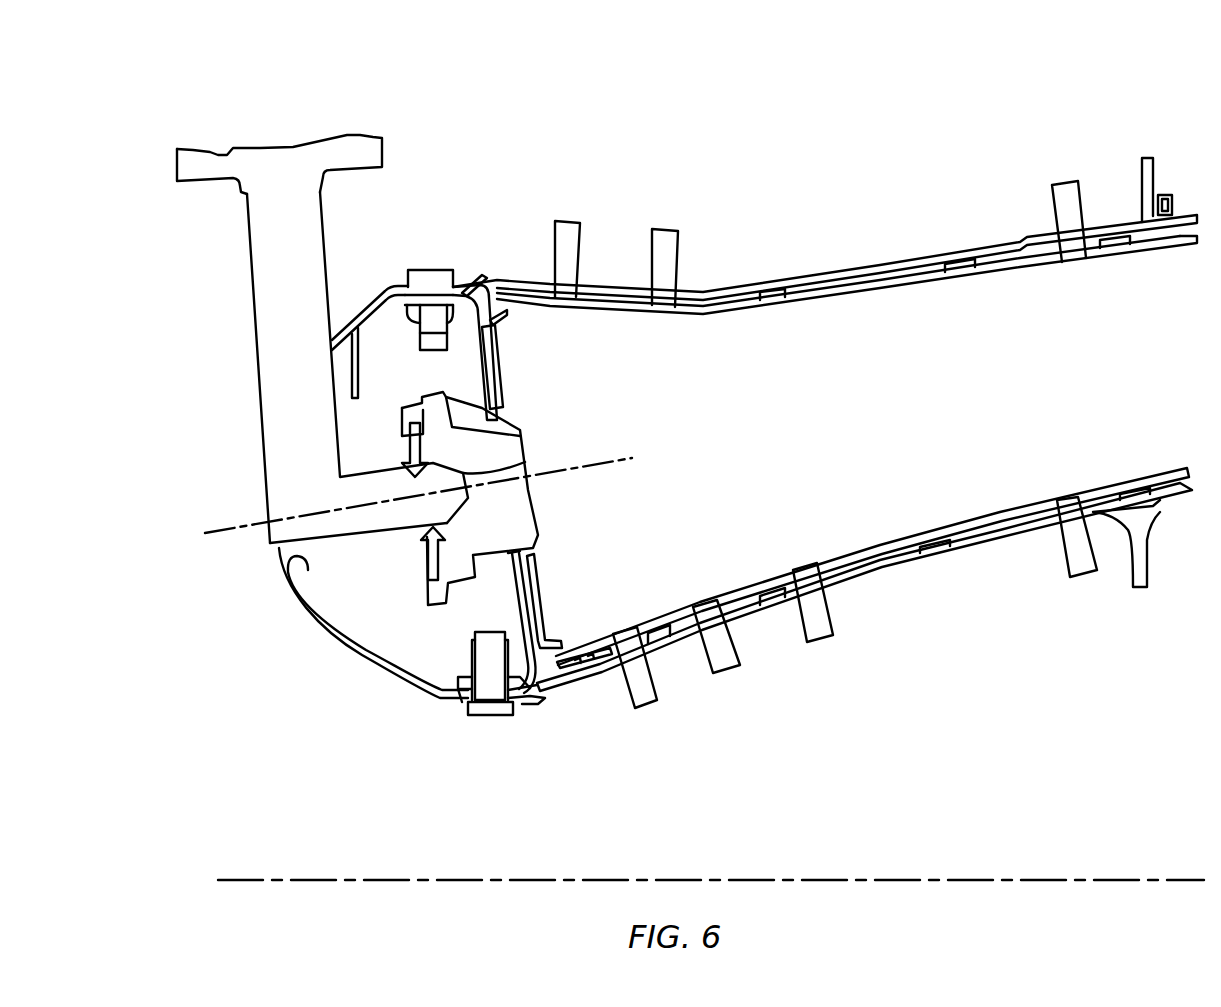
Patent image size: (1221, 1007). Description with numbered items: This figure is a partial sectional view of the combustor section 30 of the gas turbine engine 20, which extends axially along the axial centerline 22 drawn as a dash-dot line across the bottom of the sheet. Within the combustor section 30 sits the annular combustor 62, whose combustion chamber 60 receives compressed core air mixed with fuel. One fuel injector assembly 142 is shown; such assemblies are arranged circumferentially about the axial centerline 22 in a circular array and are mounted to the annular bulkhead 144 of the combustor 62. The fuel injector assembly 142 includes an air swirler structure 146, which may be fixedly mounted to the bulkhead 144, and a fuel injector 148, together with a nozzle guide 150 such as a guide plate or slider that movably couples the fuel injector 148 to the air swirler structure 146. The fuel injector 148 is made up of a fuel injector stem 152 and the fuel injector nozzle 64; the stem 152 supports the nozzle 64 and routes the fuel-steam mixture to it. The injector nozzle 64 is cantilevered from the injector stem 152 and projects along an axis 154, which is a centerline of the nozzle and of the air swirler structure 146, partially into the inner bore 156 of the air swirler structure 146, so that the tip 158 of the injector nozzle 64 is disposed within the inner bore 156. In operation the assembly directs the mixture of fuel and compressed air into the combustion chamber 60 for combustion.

The gas turbine engine 20 is at (112, 92).
The axial centerline 22 is at (1168, 880).
The combustor section 30 is at (1119, 145).
The combustion chamber 60 is at (870, 402).
The combustor 62 is at (856, 254).
The fuel injector nozzle 64 is at (312, 560).
The fuel injector assembly 142 is at (250, 466).
The bulkhead 144 is at (555, 590).
The air swirler structure 146 is at (524, 412).
The fuel injector 148 is at (252, 541).
The nozzle guide 150 is at (408, 555).
The fuel injector stem 152 is at (238, 283).
The axis 154 is at (608, 463).
The inner bore 156 is at (498, 455).
The tip 158 is at (468, 497).